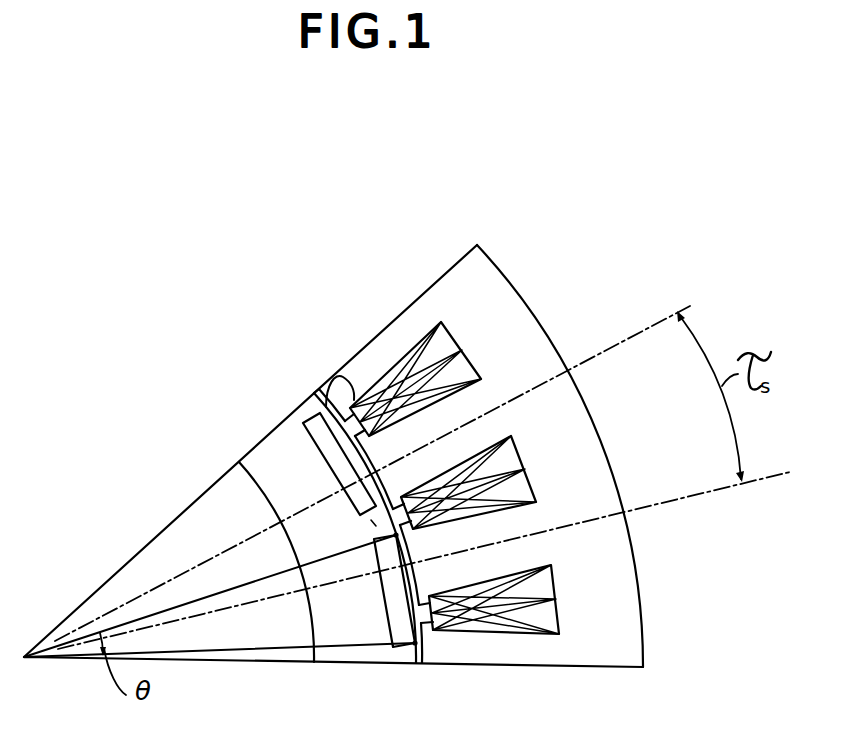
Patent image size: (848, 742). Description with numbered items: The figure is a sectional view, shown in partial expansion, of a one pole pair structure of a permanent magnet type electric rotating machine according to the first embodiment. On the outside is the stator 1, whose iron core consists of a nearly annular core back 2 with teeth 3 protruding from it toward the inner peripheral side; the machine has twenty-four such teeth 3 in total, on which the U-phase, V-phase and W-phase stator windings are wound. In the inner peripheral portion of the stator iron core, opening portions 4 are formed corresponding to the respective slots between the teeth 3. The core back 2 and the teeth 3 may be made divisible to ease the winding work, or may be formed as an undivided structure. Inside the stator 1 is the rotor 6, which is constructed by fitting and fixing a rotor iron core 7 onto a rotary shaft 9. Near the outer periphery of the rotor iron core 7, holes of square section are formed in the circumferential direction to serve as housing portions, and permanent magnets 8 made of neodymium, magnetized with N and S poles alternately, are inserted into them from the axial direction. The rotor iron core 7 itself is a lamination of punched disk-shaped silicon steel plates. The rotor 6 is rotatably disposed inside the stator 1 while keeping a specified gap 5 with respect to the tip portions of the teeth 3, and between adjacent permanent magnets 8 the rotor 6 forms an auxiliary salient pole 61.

The stator 1 is at (435, 283).
The core back 2 is at (508, 308).
The teeth 3 is at (373, 360).
The opening portions 4 is at (337, 377).
The air gap 5 is at (314, 393).
The rotor 6 is at (248, 451).
The auxiliary salient pole 61 is at (373, 522).
The rotor iron core 7 is at (377, 654).
The permanent magnets 8 is at (432, 546).
The rotary shaft 9 is at (112, 597).